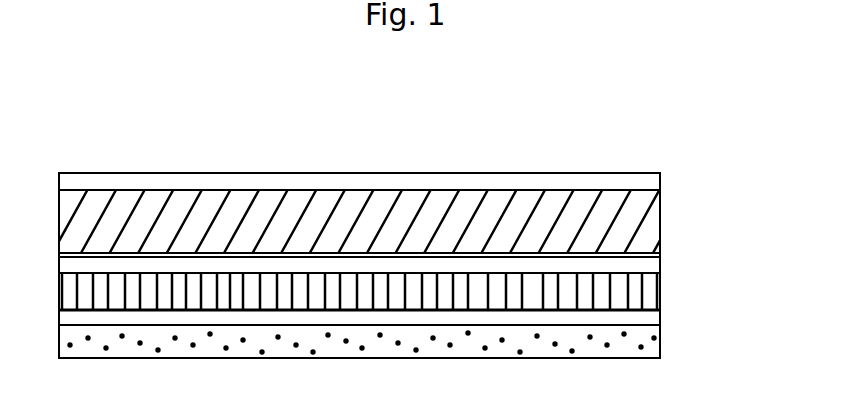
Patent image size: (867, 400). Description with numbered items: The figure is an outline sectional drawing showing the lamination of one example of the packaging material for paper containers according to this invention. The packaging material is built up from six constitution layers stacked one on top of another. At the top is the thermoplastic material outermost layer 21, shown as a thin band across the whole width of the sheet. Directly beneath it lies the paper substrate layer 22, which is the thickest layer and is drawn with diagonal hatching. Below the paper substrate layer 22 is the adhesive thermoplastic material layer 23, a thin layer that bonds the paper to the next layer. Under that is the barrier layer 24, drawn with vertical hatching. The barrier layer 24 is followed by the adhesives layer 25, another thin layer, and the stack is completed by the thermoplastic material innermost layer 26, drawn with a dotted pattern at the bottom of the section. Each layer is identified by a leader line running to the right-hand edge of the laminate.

The thermoplastic material outermost layer 21 is at (660, 173).
The paper substrate layer 22 is at (657, 204).
The adhesive thermoplastic material layer 23 is at (660, 257).
The barrier layer 24 is at (650, 288).
The adhesives layer 25 is at (660, 312).
The thermoplastic material innermost layer 26 is at (660, 342).